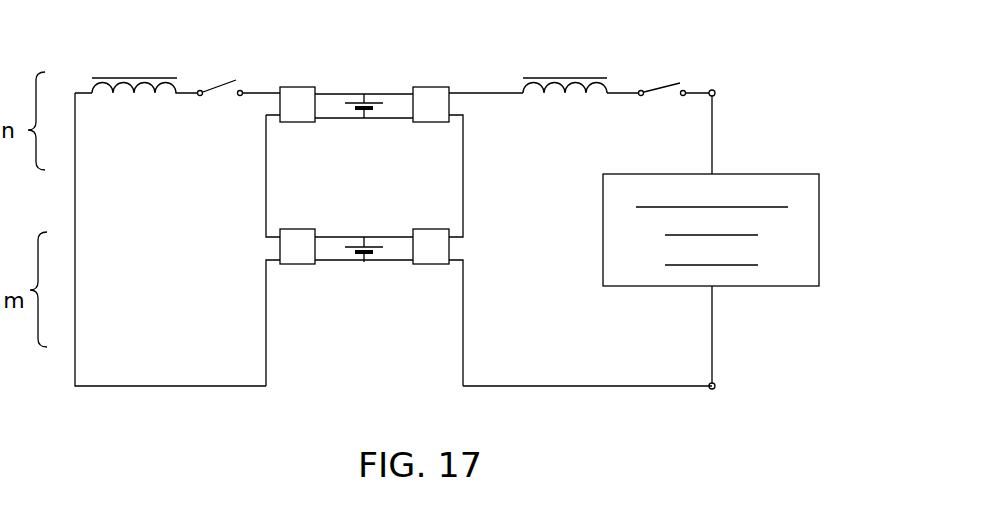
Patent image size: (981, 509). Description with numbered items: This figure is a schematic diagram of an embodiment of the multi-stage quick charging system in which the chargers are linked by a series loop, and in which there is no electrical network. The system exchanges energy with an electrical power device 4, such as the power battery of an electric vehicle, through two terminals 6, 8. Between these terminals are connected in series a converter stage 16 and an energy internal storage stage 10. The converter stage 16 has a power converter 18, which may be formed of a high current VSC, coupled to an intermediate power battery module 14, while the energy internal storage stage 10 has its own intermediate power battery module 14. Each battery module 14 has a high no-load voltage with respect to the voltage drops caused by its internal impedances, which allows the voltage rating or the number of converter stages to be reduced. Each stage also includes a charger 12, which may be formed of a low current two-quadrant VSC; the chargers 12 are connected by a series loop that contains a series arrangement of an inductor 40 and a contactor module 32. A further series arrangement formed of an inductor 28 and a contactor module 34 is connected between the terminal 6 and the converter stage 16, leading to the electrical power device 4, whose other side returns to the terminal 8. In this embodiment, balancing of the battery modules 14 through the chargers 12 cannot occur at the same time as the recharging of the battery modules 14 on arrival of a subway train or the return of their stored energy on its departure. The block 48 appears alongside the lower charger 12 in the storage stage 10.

The electrical power device 4 is at (797, 283).
The terminal 6 is at (715, 91).
The terminal 8 is at (715, 389).
The energy internal storage stage 10 is at (365, 285).
The charger 12 is at (297, 175).
The intermediate power battery module 14 is at (372, 118).
The converter stage 16 is at (357, 74).
The power converter 18 is at (431, 104).
The inductor 28 is at (553, 78).
The contactor module 32 is at (222, 82).
The contactor module 34 is at (660, 82).
The inductor 40 is at (128, 78).
The module terminal 48 is at (431, 246).